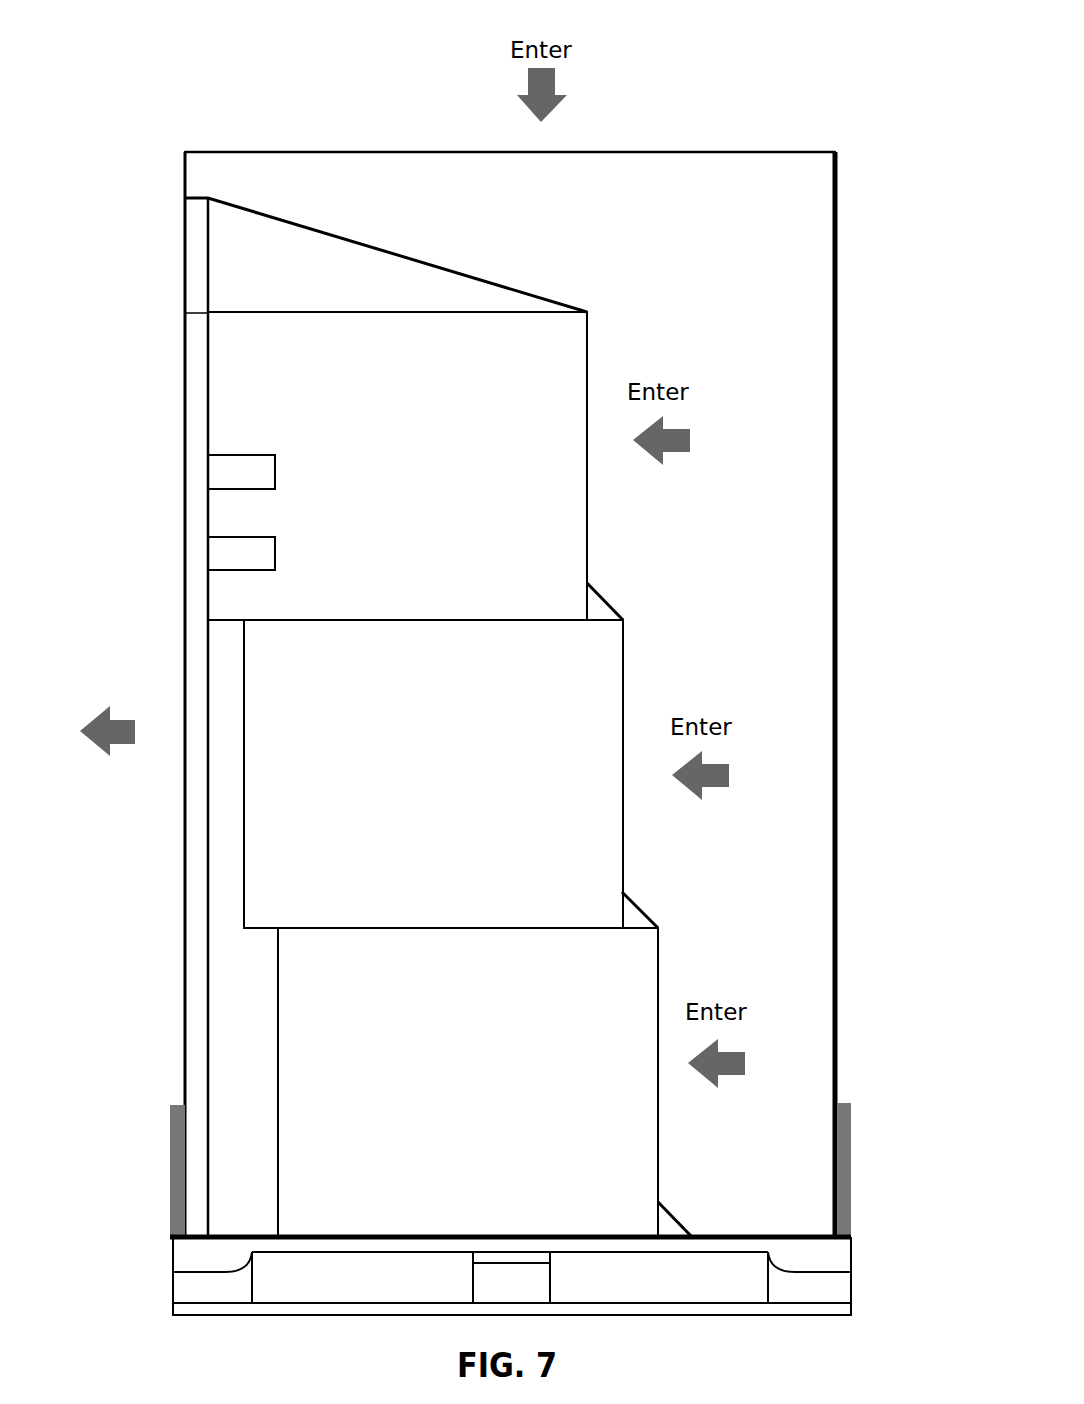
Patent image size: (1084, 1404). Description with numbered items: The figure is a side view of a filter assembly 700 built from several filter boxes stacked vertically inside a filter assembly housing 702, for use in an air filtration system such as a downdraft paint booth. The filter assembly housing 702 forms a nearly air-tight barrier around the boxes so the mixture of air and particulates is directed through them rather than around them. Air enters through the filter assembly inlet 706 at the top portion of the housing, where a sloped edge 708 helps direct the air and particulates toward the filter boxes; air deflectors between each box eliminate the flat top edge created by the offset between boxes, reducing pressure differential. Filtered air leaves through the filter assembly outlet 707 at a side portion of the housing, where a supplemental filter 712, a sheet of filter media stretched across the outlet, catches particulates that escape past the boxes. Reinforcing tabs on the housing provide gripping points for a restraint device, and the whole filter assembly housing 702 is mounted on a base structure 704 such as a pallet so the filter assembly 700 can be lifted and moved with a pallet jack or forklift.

The filter assembly 700 is at (198, 54).
The filter assembly housing 702 is at (837, 250).
The base structure 704 is at (852, 1284).
The filter assembly inlet 706 is at (606, 138).
The filter assembly outlet 707 is at (162, 812).
The sloped edge 708 is at (333, 235).
The supplemental filter 712 is at (185, 645).